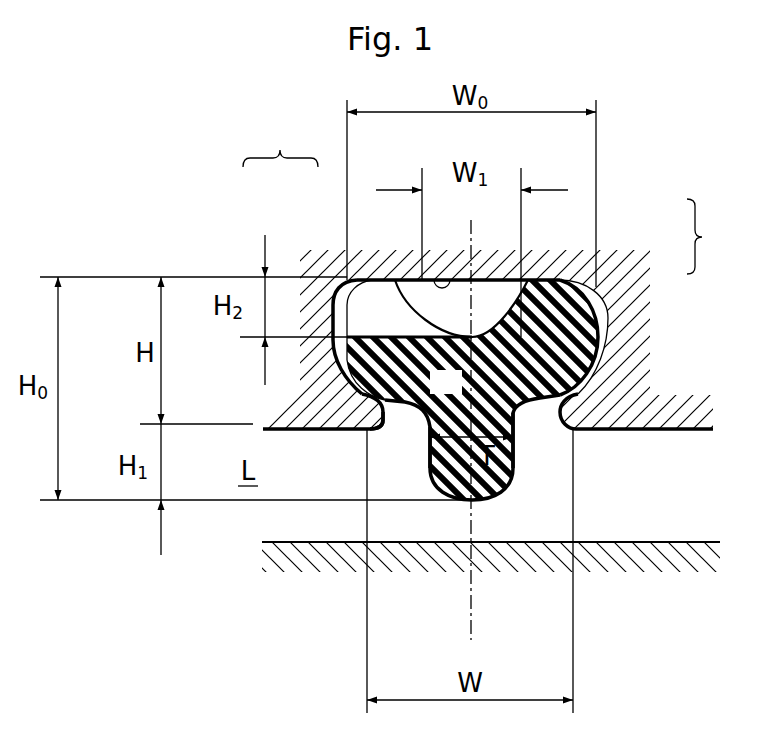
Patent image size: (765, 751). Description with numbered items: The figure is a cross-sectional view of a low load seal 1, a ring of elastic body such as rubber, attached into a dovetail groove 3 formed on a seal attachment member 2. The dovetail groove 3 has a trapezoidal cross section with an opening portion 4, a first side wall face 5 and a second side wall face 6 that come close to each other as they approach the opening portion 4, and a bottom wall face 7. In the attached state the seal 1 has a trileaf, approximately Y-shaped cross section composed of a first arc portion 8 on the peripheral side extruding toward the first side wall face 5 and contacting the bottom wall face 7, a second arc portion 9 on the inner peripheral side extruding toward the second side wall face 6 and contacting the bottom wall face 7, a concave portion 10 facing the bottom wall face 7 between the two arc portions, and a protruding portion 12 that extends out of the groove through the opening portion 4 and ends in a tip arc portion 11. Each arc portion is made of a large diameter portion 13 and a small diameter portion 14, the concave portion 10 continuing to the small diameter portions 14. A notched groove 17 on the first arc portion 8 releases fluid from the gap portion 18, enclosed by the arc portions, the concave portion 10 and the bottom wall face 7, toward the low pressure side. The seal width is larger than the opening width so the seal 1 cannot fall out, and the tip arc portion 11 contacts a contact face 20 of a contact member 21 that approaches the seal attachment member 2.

The seal 1 is at (498, 374).
The seal attachment member 2 is at (669, 434).
The dovetail groove 3 is at (472, 420).
The opening portion 4 is at (396, 424).
The first side wall face 5 is at (368, 431).
The second side wall face 6 is at (574, 431).
The bottom wall face 7 is at (445, 242).
The first arc portion 8 is at (280, 146).
The second arc portion 9 is at (704, 236).
The concave portion 10 is at (465, 333).
The tip arc portion 11 is at (480, 503).
The protruding portion 12 is at (514, 462).
The large diameter portion 13 is at (338, 292).
The small diameter portion 14 is at (390, 272).
The notched groove 17 is at (398, 333).
The gap portion 18 is at (472, 390).
The contact face 20 is at (491, 587).
The contact member 21 is at (601, 590).